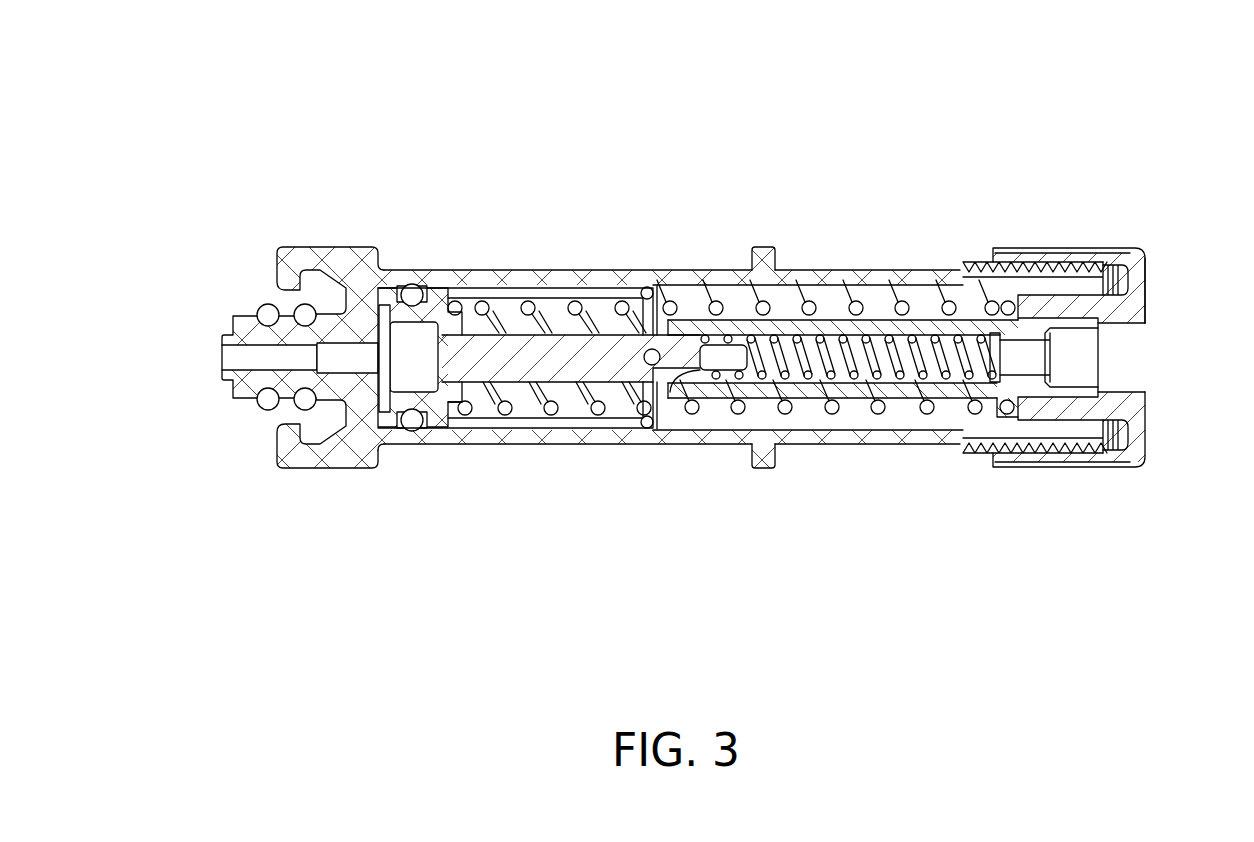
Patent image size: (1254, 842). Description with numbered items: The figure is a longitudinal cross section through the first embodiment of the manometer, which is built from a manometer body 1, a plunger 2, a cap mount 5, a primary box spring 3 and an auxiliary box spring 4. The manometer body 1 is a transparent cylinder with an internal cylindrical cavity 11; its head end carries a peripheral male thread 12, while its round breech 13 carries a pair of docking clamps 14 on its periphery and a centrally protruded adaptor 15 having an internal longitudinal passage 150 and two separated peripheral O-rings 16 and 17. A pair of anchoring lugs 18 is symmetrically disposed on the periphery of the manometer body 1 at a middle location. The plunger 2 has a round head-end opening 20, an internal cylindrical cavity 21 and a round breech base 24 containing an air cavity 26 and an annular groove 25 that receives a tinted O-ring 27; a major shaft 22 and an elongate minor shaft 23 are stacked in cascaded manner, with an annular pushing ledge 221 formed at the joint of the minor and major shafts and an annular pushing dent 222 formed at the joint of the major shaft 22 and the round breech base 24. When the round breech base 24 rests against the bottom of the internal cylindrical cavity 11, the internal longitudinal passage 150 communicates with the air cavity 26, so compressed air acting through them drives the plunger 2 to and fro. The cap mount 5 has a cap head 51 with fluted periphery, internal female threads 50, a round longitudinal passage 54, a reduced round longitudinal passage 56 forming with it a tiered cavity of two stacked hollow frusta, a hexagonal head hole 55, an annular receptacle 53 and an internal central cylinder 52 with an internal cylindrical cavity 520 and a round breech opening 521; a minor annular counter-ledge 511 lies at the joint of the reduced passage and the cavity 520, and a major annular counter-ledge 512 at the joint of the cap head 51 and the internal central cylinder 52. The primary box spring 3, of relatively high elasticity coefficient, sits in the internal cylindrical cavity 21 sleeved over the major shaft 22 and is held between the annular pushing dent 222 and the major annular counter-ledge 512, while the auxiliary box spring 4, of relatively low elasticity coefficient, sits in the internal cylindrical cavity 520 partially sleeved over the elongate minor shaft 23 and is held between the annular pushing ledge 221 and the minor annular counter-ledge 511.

The manometer body 1 is at (565, 278).
The internal cylindrical cavity 11 is at (742, 300).
The peripheral male thread 12 is at (1147, 443).
The round breech 13 is at (390, 447).
The docking clamps 14 is at (298, 462).
The adaptor 15 is at (247, 323).
The internal longitudinal passage 150 is at (250, 362).
The O-ring 16 is at (300, 404).
The O-ring 17 is at (266, 402).
The anchoring lugs 18 is at (767, 263).
The plunger 2 is at (490, 285).
The round head-end opening 20 is at (637, 293).
The internal cylindrical cavity 21 is at (520, 312).
The major shaft 22 is at (620, 355).
The annular pushing ledge 221 is at (732, 358).
The annular pushing dent 222 is at (453, 405).
The elongate minor shaft 23 is at (763, 450).
The round breech base 24 is at (414, 424).
The annular groove 25 is at (414, 290).
The air cavity 26 is at (407, 353).
The tinted O-ring 27 is at (398, 283).
The primary box spring 3 is at (868, 300).
The auxiliary box spring 4 is at (818, 300).
The cap mount 5 is at (996, 262).
The internal female threads 50 is at (1065, 288).
The cap head 51 is at (1097, 450).
The minor annular counter-ledge 511 is at (1012, 405).
The major annular counter-ledge 512 is at (1036, 376).
The internal central cylinder 52 is at (865, 390).
The internal cylindrical cavity 520 is at (933, 370).
The round breech opening 521 is at (662, 293).
The annular receptacle 53 is at (1120, 268).
The round longitudinal passage 54 is at (1077, 362).
The hexagonal head hole 55 is at (1147, 335).
The reduced round longitudinal passage 56 is at (1067, 405).